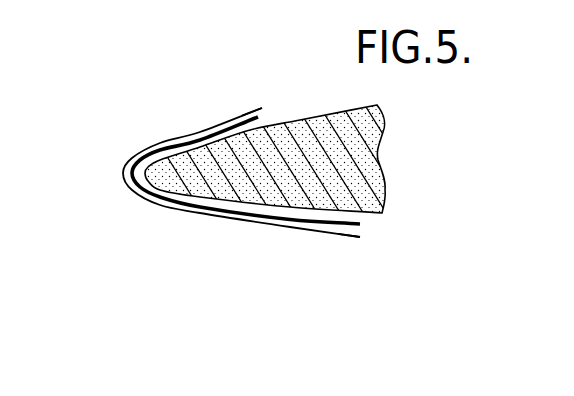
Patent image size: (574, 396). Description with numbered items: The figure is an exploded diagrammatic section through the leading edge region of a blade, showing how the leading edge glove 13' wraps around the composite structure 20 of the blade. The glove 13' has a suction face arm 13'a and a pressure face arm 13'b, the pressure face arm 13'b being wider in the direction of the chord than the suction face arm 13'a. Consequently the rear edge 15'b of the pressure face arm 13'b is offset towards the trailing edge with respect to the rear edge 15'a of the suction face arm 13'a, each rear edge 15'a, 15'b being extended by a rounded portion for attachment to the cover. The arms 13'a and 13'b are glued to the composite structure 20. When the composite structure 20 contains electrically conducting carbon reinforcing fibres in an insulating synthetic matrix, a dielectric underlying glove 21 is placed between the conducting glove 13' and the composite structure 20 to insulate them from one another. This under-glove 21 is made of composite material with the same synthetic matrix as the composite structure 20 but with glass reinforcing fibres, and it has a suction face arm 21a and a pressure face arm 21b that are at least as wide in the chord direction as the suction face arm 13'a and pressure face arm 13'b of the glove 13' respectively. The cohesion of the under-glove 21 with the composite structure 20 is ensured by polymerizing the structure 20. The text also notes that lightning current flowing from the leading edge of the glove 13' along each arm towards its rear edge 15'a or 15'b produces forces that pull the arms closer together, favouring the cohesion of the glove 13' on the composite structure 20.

The glove 13' is at (227, 176).
The suction face arm 13'a is at (170, 135).
The pressure face arm 13'b is at (241, 223).
The rear edge 15'a is at (281, 91).
The rear edge 15'b is at (374, 260).
The composite structure 20 is at (333, 163).
The dielectric underlying glove 21 is at (246, 179).
The suction face arm 21a is at (208, 136).
The pressure face arm 21b is at (296, 222).